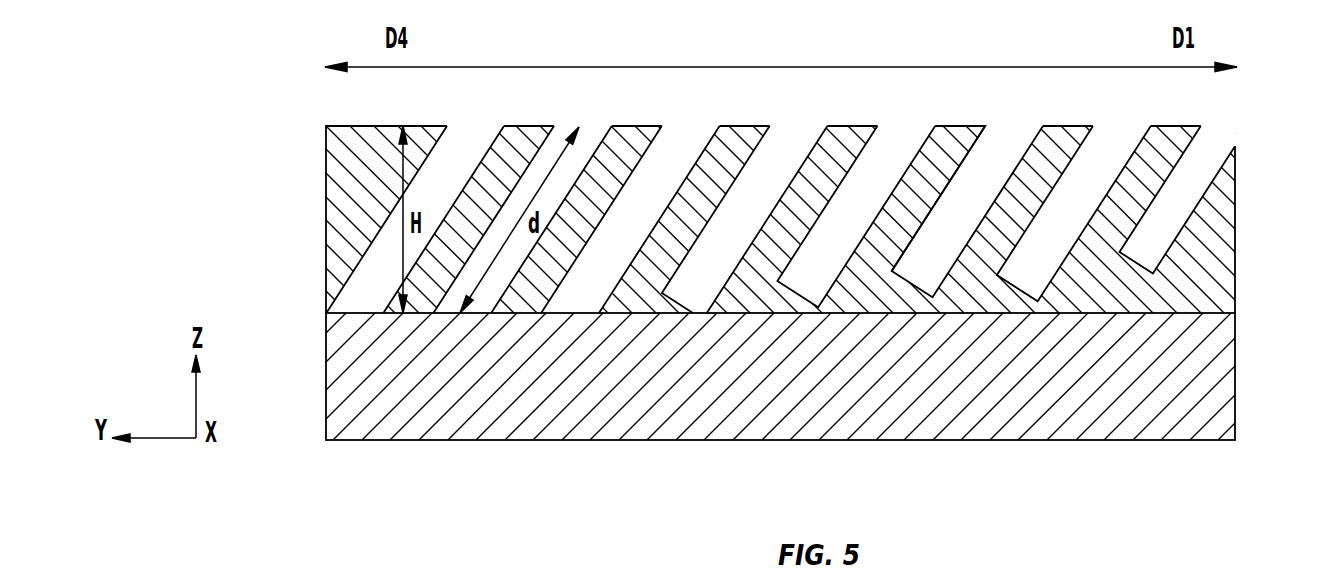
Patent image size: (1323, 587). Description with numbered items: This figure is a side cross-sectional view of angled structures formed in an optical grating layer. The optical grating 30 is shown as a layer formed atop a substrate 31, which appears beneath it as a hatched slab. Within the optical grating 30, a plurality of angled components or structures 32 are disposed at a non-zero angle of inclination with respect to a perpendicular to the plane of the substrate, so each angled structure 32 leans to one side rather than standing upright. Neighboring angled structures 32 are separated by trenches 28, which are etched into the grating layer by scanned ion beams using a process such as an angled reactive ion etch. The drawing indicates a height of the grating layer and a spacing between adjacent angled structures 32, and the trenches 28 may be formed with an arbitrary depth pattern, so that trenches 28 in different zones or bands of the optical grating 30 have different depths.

The trench 28 is at (822, 253).
The optical grating 30 is at (1243, 127).
The substrate 31 is at (355, 397).
The angled structure 32 is at (912, 210).